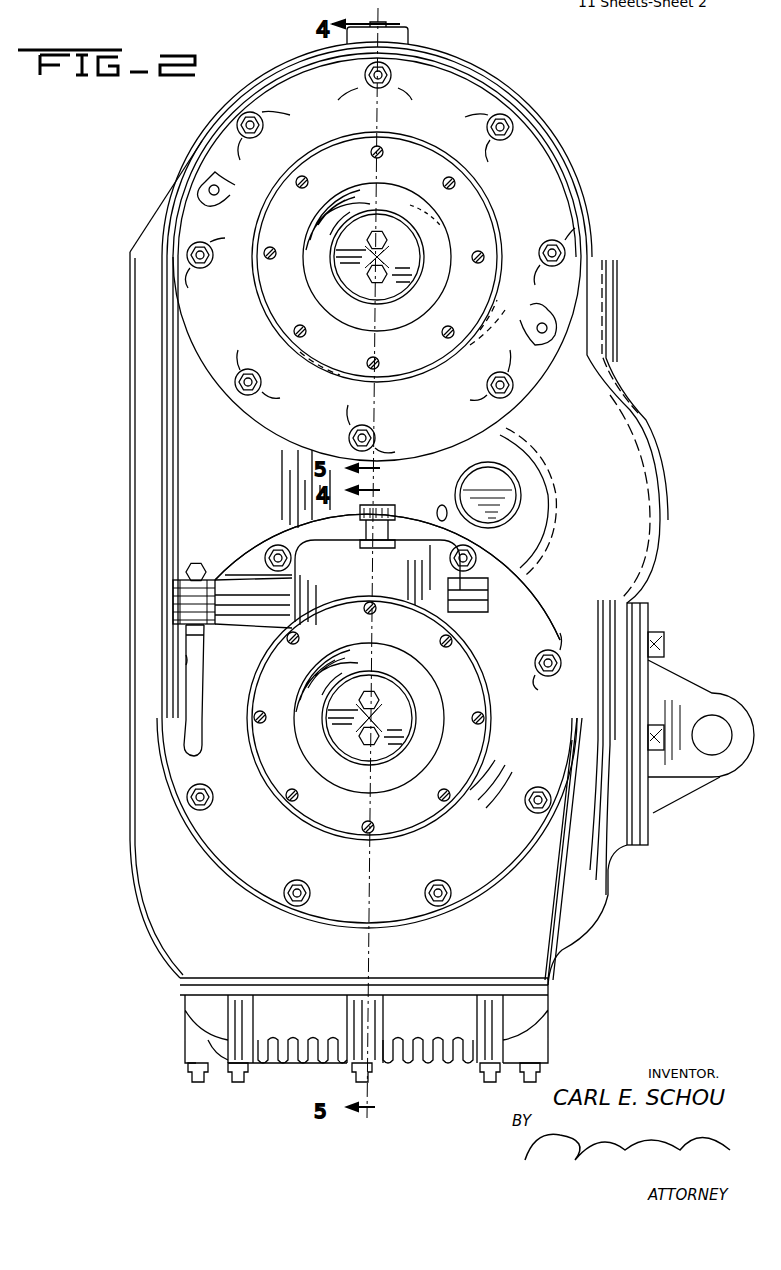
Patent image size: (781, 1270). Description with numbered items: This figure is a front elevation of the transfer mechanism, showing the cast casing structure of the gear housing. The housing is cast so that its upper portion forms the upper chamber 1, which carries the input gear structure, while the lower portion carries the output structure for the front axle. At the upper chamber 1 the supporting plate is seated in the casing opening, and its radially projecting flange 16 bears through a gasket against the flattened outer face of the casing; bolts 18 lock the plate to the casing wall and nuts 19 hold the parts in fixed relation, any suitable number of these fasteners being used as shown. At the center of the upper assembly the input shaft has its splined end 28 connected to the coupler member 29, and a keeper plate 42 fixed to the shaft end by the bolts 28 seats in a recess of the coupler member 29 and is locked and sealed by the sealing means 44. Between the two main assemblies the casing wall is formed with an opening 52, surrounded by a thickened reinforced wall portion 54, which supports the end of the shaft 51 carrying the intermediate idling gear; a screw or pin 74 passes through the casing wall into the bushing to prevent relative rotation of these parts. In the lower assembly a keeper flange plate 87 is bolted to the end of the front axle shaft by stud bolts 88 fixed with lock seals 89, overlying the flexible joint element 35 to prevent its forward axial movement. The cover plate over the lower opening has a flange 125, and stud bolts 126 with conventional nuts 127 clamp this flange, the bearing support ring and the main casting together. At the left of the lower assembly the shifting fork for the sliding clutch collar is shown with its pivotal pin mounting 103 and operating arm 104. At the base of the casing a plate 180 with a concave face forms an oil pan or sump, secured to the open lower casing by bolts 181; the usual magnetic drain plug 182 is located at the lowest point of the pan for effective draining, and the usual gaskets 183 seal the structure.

The upper chamber 1 is at (476, 79).
The radially projecting flange 16 is at (518, 362).
The bolts 18 is at (392, 76).
The nuts 19 is at (258, 118).
The splined end 28 is at (385, 242).
The coupler member 29 is at (343, 352).
The flexible joint element 35 is at (420, 811).
The keeper plate 42 is at (383, 283).
The sealing means 44 is at (366, 262).
The shaft 51 is at (500, 480).
The opening 52 is at (465, 478).
The reinforced wall portion 54 is at (536, 520).
The screw or pin 74 is at (435, 500).
The keeper flange plate 87 is at (428, 698).
The stud bolts 88 is at (374, 693).
The lock seals 89 is at (384, 720).
The pivotal pin mounting 103 is at (205, 572).
The operating arm 104 is at (196, 692).
The flange 125 is at (528, 590).
The stud bolts 126 is at (293, 898).
The nuts 127 is at (550, 645).
The plate 180 is at (366, 1049).
The bolts 181 is at (196, 1078).
The magnetic drain plug 182 is at (369, 1070).
The gaskets 183 is at (552, 992).